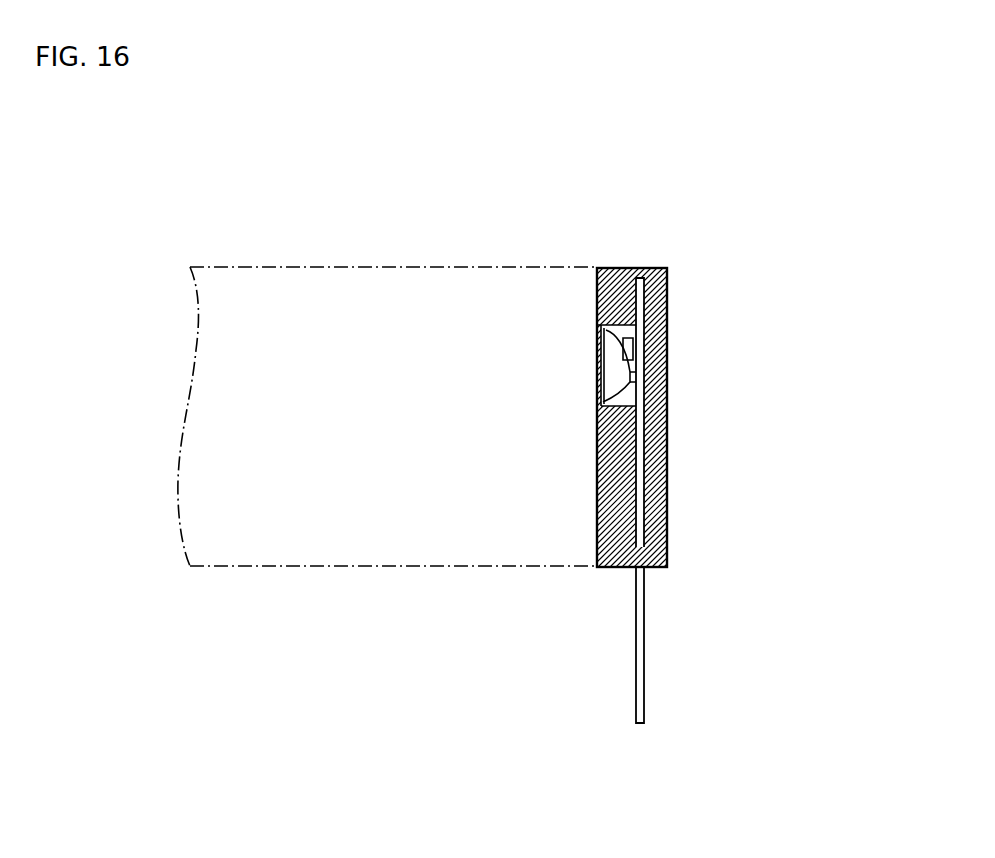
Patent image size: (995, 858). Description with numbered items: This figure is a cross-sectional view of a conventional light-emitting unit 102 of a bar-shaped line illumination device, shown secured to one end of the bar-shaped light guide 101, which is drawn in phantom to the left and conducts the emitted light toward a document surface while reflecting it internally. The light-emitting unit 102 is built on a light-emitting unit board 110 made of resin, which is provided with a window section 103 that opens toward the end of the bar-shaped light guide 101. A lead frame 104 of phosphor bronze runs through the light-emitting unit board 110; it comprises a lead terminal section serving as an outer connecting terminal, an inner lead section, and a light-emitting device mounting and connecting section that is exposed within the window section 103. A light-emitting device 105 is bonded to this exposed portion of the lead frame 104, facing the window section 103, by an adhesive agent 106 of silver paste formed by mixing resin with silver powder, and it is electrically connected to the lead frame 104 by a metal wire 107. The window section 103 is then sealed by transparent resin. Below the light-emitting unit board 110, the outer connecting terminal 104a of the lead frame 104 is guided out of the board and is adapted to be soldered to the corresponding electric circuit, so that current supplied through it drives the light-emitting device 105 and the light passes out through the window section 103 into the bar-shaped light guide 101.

The bar-shaped light guide 101 is at (265, 332).
The light-emitting unit 102 is at (672, 265).
The light-emitting unit board 110 is at (622, 267).
The lead frame 104 is at (644, 352).
The outer connecting terminal 104a is at (645, 608).
The window section 103 is at (602, 392).
The light-emitting device 105 is at (608, 345).
The adhesive agent 106 is at (605, 330).
The metal wire 107 is at (606, 375).